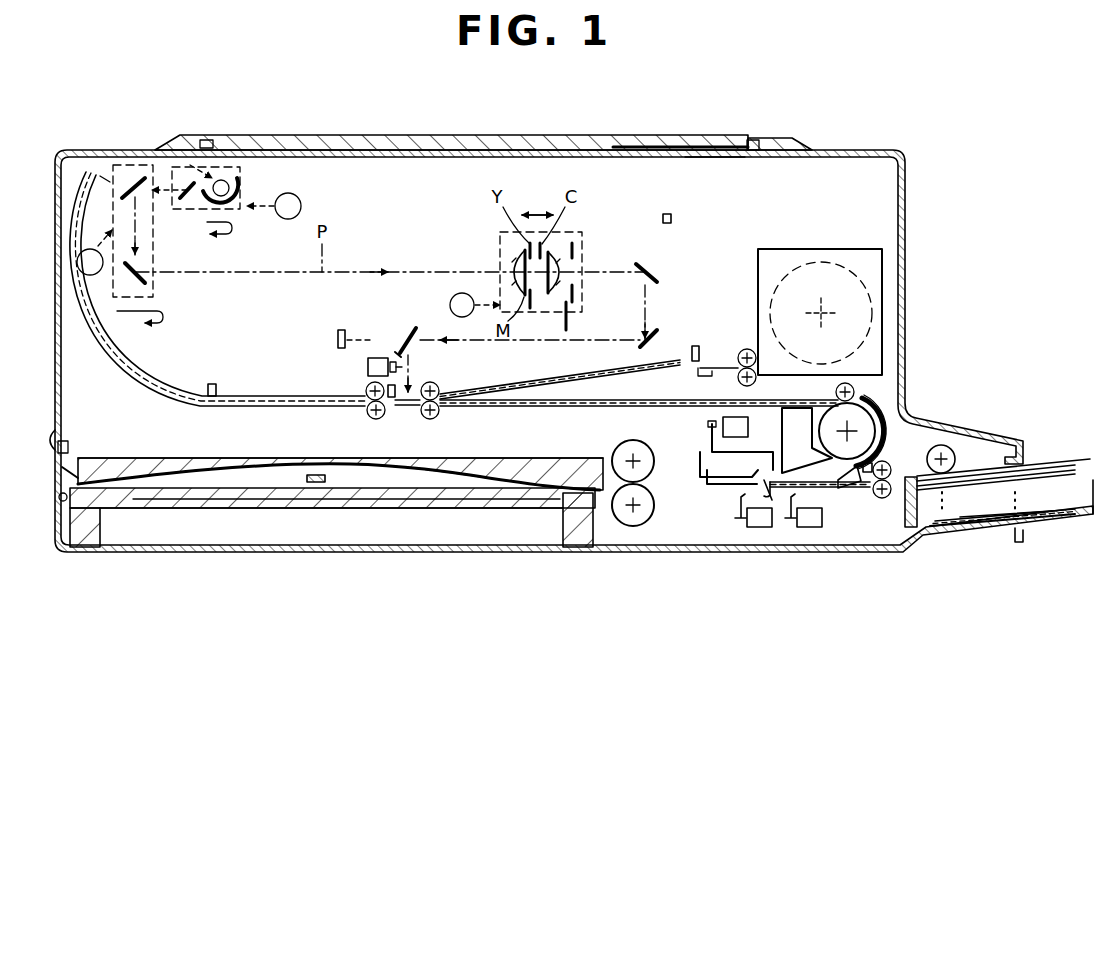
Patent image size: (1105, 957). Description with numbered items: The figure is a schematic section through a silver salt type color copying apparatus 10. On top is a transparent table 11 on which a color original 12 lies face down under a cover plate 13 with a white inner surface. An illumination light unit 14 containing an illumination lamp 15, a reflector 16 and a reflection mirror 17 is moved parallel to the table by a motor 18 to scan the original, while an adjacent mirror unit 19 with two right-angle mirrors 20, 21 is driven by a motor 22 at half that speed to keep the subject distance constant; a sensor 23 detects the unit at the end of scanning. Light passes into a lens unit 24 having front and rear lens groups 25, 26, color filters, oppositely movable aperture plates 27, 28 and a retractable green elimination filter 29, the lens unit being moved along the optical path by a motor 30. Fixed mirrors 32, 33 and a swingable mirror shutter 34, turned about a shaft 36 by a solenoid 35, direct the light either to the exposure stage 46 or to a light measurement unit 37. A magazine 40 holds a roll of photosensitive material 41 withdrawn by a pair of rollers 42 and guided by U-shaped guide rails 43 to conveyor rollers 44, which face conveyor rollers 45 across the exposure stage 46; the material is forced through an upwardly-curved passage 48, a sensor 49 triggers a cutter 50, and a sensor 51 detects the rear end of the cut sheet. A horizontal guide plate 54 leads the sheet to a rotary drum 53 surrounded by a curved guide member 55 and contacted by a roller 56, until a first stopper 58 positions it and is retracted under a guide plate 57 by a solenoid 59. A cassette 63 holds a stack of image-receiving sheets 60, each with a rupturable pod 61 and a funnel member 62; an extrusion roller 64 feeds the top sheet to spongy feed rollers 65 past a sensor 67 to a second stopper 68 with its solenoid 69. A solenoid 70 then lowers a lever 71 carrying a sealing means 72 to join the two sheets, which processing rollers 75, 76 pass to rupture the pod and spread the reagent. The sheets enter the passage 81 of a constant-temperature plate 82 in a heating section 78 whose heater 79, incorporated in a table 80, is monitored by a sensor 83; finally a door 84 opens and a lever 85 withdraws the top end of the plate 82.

The copying apparatus 10 is at (905, 205).
The transparent table 11 is at (703, 158).
The color original 12 is at (490, 146).
The cover plate 13 is at (665, 144).
The illumination light unit 14 is at (183, 181).
The illumination lamp 15 is at (230, 188).
The reflector 16 is at (230, 178).
The reflection mirror 17 is at (190, 202).
The motor 18 is at (302, 206).
The mirror unit 19 is at (107, 178).
The mirror 20 is at (136, 181).
The mirror 21 is at (147, 280).
The motor 22 is at (92, 276).
The sensor 23 is at (672, 218).
The lens unit 24 is at (500, 262).
The front lens group 25 is at (515, 252).
The rear lens group 26 is at (560, 252).
The aperture plate 27 is at (575, 250).
The aperture plate 28 is at (576, 293).
The green elimination filter 29 is at (570, 310).
The motor 30 is at (450, 302).
The fixed mirror 32 is at (660, 272).
The fixed mirror 33 is at (655, 332).
The swingable mirror shutter 34 is at (405, 340).
The solenoid 35 is at (367, 362).
The shaft 36 is at (396, 350).
The light measurement unit 37 is at (337, 332).
The magazine 40 is at (880, 287).
The photosensitive material 41 is at (714, 366).
The pair of rollers 42 is at (746, 348).
The guide rails 43 is at (525, 381).
The conveyor rollers 44 is at (433, 381).
The conveyor rollers 45 is at (366, 388).
The exposure stage 46 is at (411, 399).
The upwardly-curved passage 48 is at (147, 380).
The sensor 49 is at (212, 383).
The cutter 50 is at (695, 345).
The sensor 51 is at (393, 398).
The rotary drum 53 is at (862, 418).
The guide plate 54 is at (515, 408).
The curved guide member 55 is at (884, 425).
The roller 56 is at (855, 389).
The guide plate 57 is at (836, 489).
The first stopper 58 is at (772, 503).
The solenoid 59 is at (805, 529).
The image-receiving sheets 60 is at (1047, 458).
The rupturable pod 61 is at (950, 528).
The funnel member 62 is at (985, 524).
The cassette 63 is at (1053, 519).
The extrusion roller 64 is at (956, 458).
The feed rollers 65 is at (882, 499).
The sensor 67 is at (874, 465).
The second stopper 68 is at (712, 498).
The solenoid 69 is at (757, 529).
The solenoid 70 is at (745, 426).
The lever 71 is at (711, 440).
The sealing means 72 is at (787, 465).
The processing roller 75 is at (622, 445).
The processing roller 76 is at (632, 528).
The heating section 78 is at (248, 456).
The heater 79 is at (270, 508).
The table 80 is at (405, 508).
The passage 81 is at (183, 469).
The plate 82 is at (124, 458).
The sensor 83 is at (318, 485).
The door 84 is at (62, 435).
The lever 85 is at (75, 465).